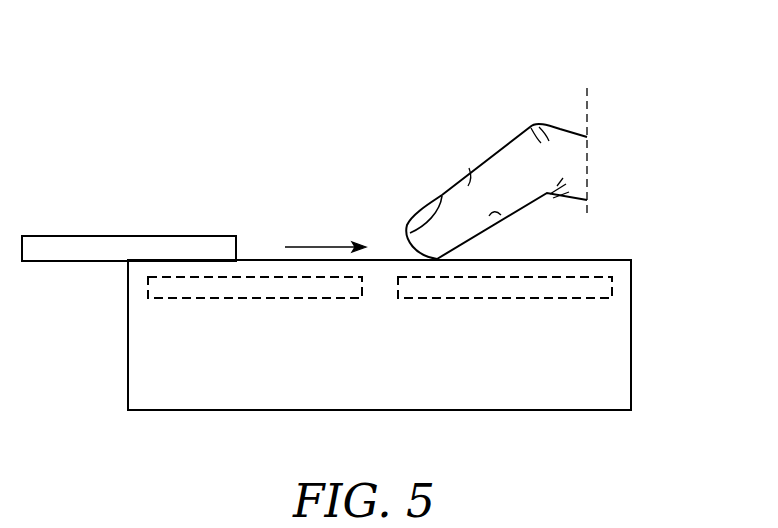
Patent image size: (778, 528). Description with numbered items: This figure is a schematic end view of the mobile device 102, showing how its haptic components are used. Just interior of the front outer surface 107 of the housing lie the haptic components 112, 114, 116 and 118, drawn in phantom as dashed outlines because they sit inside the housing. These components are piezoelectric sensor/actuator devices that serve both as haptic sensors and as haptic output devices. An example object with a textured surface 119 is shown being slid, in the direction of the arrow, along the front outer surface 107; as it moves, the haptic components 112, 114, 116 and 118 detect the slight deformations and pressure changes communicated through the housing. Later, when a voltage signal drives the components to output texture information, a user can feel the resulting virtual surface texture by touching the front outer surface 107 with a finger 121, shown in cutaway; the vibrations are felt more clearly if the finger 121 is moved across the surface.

The mobile device 102 is at (608, 220).
The front outer surface 107 is at (610, 260).
The haptic component 112 is at (178, 298).
The haptic component 114 is at (255, 287).
The haptic component 116 is at (585, 297).
The haptic component 118 is at (505, 287).
The textured surface 119 is at (130, 235).
The finger 121 is at (523, 104).